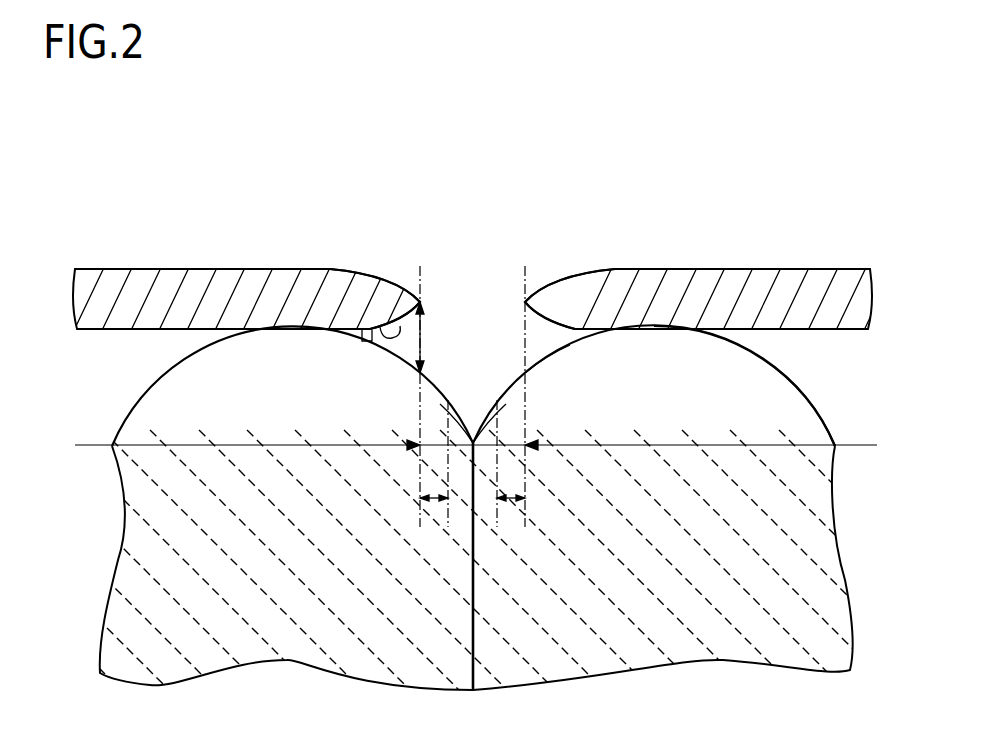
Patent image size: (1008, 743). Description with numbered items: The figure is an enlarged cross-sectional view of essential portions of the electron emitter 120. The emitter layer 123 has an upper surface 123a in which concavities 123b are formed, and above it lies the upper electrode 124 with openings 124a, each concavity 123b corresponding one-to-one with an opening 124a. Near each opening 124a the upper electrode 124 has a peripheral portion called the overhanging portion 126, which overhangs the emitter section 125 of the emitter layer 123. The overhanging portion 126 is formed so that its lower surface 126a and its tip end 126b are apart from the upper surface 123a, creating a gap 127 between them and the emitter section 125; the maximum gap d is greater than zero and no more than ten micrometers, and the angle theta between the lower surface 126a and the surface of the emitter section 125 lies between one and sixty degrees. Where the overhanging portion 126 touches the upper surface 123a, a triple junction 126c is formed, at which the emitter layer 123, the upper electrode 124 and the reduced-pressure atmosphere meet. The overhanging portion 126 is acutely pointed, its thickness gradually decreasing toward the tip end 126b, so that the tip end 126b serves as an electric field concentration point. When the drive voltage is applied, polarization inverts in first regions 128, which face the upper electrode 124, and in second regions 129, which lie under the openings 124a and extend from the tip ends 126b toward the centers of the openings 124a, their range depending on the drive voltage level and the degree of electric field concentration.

The electron emitter 120 is at (152, 180).
The emitter layer 123 is at (831, 503).
The upper surface of the emitter layer 123a is at (780, 368).
The concavity 123b is at (473, 427).
The upper electrode 124 is at (247, 268).
The opening 124a is at (528, 212).
The emitter section 125 is at (543, 368).
The overhanging portion 126 is at (395, 283).
The lower surface of the overhanging portion 126a is at (375, 327).
The tip end of the overhanging portion 126b is at (525, 302).
The triple junction 126c is at (637, 328).
The gap 127 is at (402, 343).
The first region 128 is at (272, 447).
The second region 129 is at (438, 502).
The maximum gap d is at (428, 337).
The angle between the lower surface and the emitter section surface theta is at (364, 342).